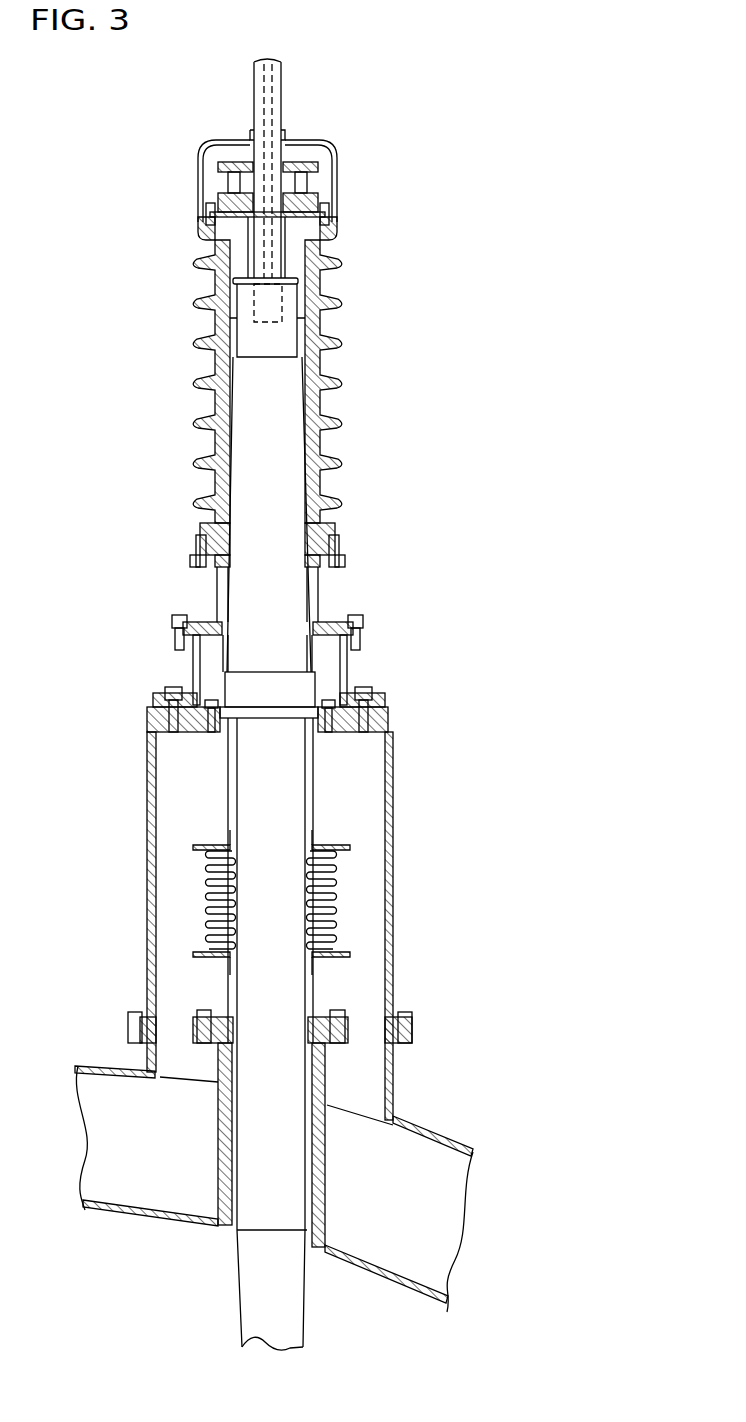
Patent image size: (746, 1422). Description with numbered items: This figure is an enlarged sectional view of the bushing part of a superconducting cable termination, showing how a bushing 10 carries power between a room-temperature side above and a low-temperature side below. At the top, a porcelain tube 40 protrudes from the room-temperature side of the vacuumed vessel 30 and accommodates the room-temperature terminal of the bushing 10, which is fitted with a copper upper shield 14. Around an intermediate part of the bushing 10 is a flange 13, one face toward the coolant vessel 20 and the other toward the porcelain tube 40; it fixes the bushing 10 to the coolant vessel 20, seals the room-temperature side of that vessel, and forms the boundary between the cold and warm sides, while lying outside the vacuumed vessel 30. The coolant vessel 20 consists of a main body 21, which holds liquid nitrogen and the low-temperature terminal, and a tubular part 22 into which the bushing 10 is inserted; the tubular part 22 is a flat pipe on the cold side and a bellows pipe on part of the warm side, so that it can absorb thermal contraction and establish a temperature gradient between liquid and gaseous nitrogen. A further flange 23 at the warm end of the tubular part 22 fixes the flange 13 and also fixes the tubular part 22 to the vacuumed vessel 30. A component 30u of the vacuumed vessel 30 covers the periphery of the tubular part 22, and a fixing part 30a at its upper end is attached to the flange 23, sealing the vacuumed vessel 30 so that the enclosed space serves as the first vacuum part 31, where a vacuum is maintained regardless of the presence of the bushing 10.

The bushing 10 is at (318, 545).
The flange 13 is at (289, 708).
The upper shield 14 is at (300, 344).
The coolant vessel 20 is at (414, 1034).
The main body 21 is at (390, 1265).
The tubular part 22 is at (318, 835).
The flange 23 is at (350, 735).
The vacuumed vessel 30 is at (427, 1130).
The fixing part 30a is at (157, 705).
The component 30u is at (392, 868).
The first vacuum part 31 is at (367, 980).
The porcelain tube 40 is at (338, 457).